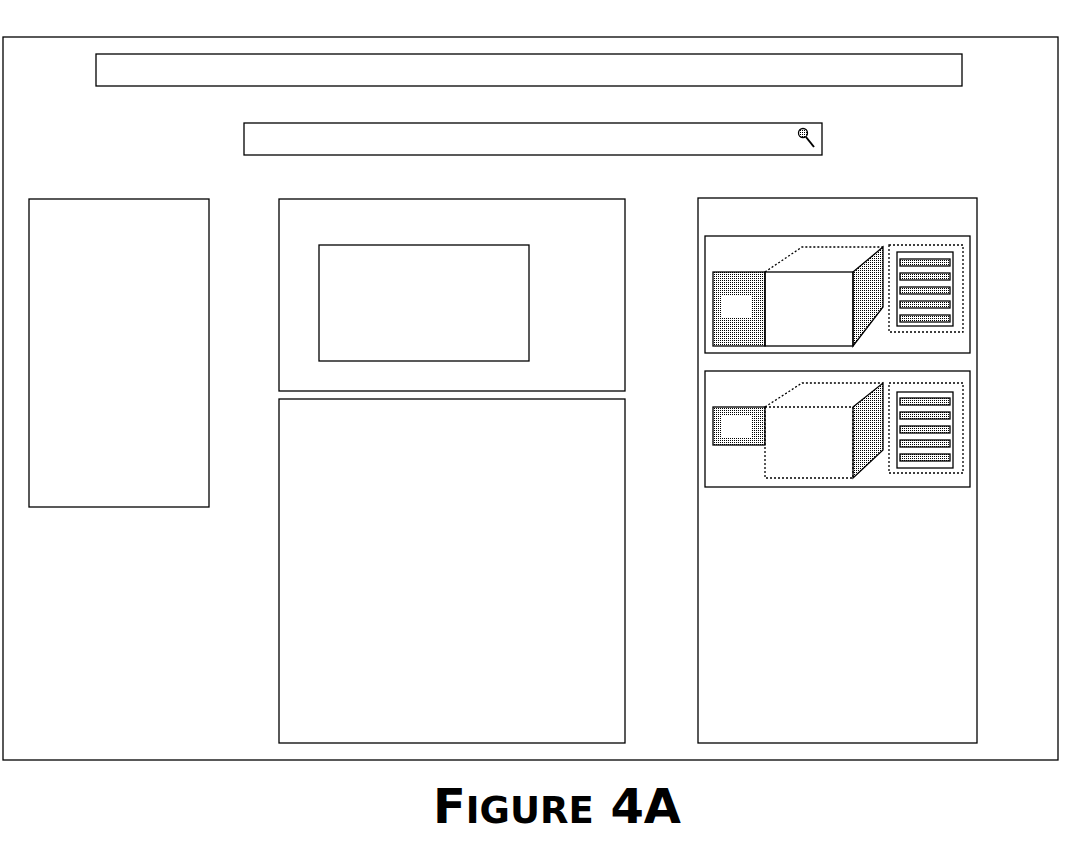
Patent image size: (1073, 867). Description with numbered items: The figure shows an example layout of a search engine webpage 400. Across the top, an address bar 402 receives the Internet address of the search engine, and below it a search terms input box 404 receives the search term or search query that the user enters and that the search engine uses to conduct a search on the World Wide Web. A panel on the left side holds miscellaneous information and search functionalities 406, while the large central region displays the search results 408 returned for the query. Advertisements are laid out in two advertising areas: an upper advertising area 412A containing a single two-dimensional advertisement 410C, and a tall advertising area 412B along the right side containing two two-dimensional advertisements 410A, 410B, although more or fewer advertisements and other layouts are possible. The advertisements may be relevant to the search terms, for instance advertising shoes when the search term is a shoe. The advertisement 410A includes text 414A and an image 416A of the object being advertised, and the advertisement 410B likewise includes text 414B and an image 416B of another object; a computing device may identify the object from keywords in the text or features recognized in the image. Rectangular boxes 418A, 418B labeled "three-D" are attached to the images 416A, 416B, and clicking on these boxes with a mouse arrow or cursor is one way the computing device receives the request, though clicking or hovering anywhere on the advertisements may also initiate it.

The webpage 400 is at (103, 760).
The address bar 402 is at (962, 72).
The search terms input box 404 is at (820, 138).
The miscellaneous information and search functionalities 406 is at (65, 507).
The search results 408 is at (279, 552).
The advertising area 412A is at (279, 295).
The 2D advertisement 410C is at (529, 297).
The advertising area 412B is at (865, 743).
The 2D advertisement 410A is at (970, 243).
The 2D advertisement 410B is at (970, 378).
The text 414A is at (963, 312).
The text 414B is at (963, 455).
The image 416A is at (810, 273).
The image 416B is at (853, 445).
The rectangular box labeled "3D" 418A is at (713, 307).
The rectangular box labeled "3D" 418B is at (713, 428).